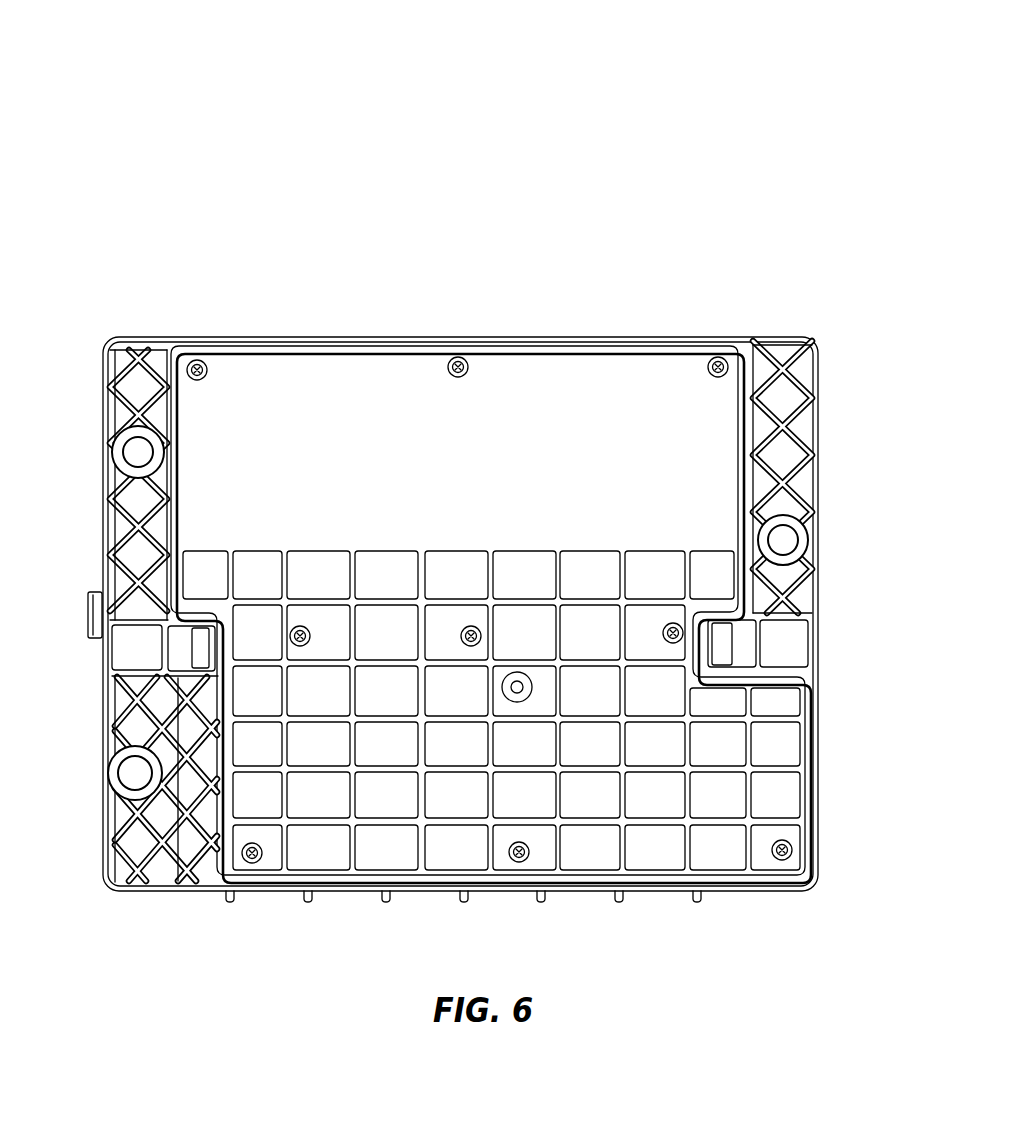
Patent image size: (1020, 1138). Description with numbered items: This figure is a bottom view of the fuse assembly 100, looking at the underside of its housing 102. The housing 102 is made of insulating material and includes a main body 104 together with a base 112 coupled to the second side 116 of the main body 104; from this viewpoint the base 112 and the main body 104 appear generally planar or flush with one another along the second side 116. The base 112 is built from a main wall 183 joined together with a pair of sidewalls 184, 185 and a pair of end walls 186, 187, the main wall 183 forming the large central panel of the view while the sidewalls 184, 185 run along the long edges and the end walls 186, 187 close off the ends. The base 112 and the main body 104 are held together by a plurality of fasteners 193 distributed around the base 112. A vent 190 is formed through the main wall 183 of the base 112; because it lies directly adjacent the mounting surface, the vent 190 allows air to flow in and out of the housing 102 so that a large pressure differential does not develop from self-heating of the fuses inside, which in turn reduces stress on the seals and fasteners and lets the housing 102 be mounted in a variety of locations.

The fuse assembly 100 is at (283, 170).
The housing 102 is at (836, 333).
The main body 104 is at (144, 902).
The base 112 is at (559, 368).
The second side 116 is at (838, 736).
The main wall 183 is at (360, 368).
The sidewall 184 is at (466, 362).
The sidewall 185 is at (357, 879).
The end wall 186 is at (175, 517).
The end wall 187 is at (742, 443).
The vent 190 is at (543, 705).
The fasteners 193 is at (196, 364).